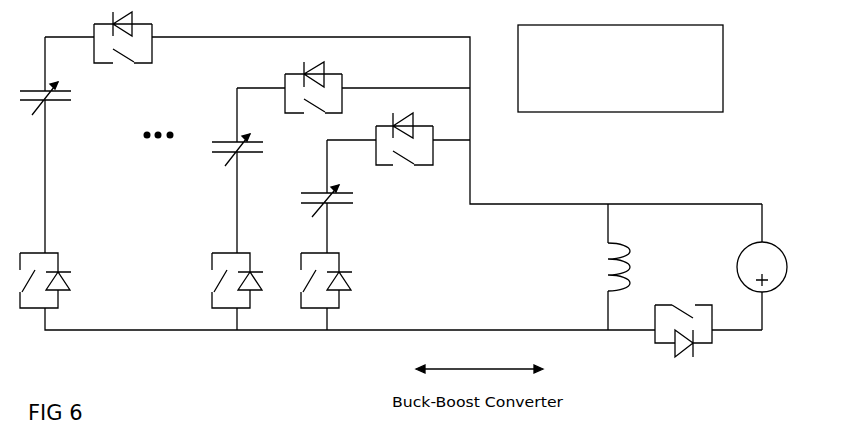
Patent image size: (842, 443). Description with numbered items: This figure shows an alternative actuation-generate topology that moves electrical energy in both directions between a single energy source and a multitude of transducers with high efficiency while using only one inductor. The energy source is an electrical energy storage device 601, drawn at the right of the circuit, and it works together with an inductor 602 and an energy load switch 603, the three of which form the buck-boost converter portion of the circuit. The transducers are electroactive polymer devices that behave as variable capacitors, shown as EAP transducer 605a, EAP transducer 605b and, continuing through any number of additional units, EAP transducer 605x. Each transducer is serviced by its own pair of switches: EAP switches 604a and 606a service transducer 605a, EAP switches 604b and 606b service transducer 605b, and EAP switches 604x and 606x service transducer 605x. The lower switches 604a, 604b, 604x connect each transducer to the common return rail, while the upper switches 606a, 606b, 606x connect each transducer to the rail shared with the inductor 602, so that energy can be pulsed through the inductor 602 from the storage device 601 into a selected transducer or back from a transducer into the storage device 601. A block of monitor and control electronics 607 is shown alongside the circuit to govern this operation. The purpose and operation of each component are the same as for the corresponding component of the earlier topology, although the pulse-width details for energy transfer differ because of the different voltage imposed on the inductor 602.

The electrical energy storage device 601 is at (804, 309).
The inductor 602 is at (600, 270).
The energy load switch 603 is at (689, 293).
The EAP switch 604a is at (390, 307).
The EAP switch 604b is at (199, 307).
The EAP switch 604x is at (108, 307).
The EAP transducer 605a is at (367, 230).
The EAP transducer 605b is at (278, 178).
The EAP transducer 605x is at (86, 128).
The EAP switch 606a is at (432, 191).
The EAP switch 606b is at (313, 140).
The EAP switch 606x is at (146, 90).
The monitor and control electronics 607 is at (606, 100).